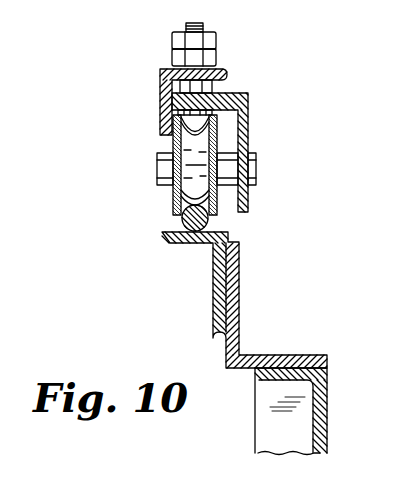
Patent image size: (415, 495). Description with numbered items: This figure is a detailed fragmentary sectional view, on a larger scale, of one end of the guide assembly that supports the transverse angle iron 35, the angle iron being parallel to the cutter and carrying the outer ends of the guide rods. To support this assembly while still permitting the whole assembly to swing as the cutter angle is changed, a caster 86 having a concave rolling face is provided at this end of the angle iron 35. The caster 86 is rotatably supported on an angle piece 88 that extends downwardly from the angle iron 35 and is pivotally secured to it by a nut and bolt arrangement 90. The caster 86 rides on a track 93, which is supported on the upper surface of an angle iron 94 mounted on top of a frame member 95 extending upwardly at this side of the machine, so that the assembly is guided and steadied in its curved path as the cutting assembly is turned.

The transverse angle iron 35 is at (163, 84).
The caster 86 is at (173, 193).
The angle piece 88 is at (243, 125).
The nut and bolt arrangement 90 is at (213, 60).
The track 93 is at (208, 225).
The angle iron 94 is at (222, 277).
The frame member 95 is at (320, 378).